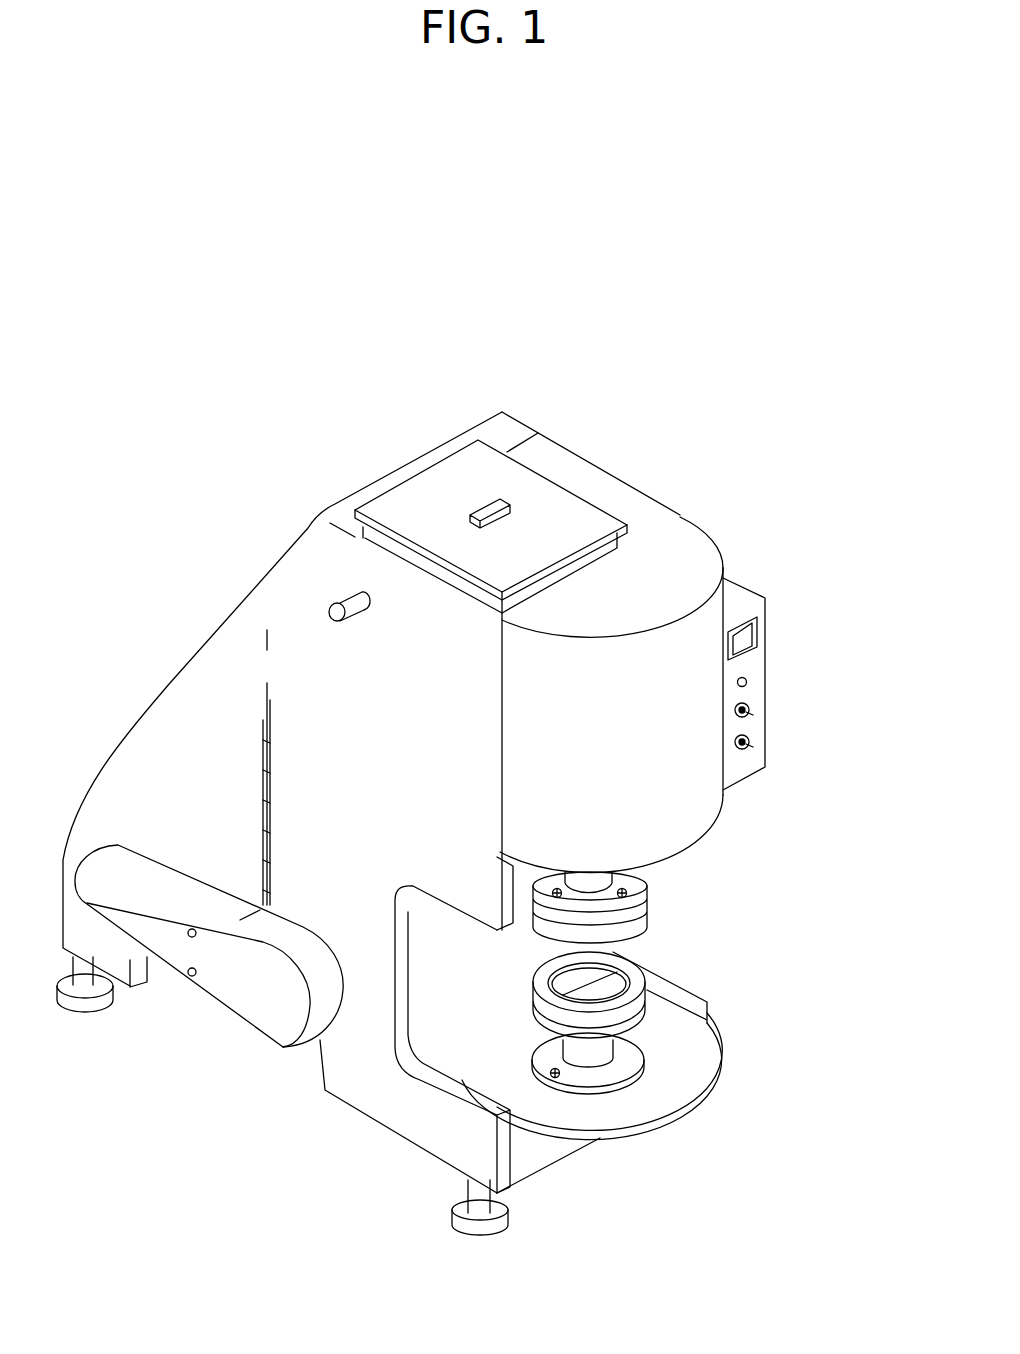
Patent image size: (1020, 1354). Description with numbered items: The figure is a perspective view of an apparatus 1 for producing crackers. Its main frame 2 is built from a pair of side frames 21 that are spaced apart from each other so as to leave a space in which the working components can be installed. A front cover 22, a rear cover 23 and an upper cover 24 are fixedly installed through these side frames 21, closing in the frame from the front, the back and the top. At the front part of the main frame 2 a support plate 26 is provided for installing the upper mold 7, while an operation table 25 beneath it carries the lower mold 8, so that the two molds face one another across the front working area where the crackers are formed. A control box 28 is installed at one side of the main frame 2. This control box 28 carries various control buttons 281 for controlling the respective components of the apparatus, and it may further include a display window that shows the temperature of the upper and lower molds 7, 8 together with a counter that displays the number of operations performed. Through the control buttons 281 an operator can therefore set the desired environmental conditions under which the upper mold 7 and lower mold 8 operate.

The button attaching apparatus 1 is at (187, 291).
The main frame 2 is at (157, 625).
The side frames 21 is at (318, 541).
The front cover 22 is at (675, 835).
The rear cover 23 is at (510, 420).
The upper cover 24 is at (615, 490).
The operation table 25 is at (605, 1117).
The support plate 26 is at (543, 883).
The upper mold 7 is at (553, 927).
The lower mold 8 is at (627, 1012).
The control box 28 is at (760, 670).
The control buttons 281 is at (748, 737).